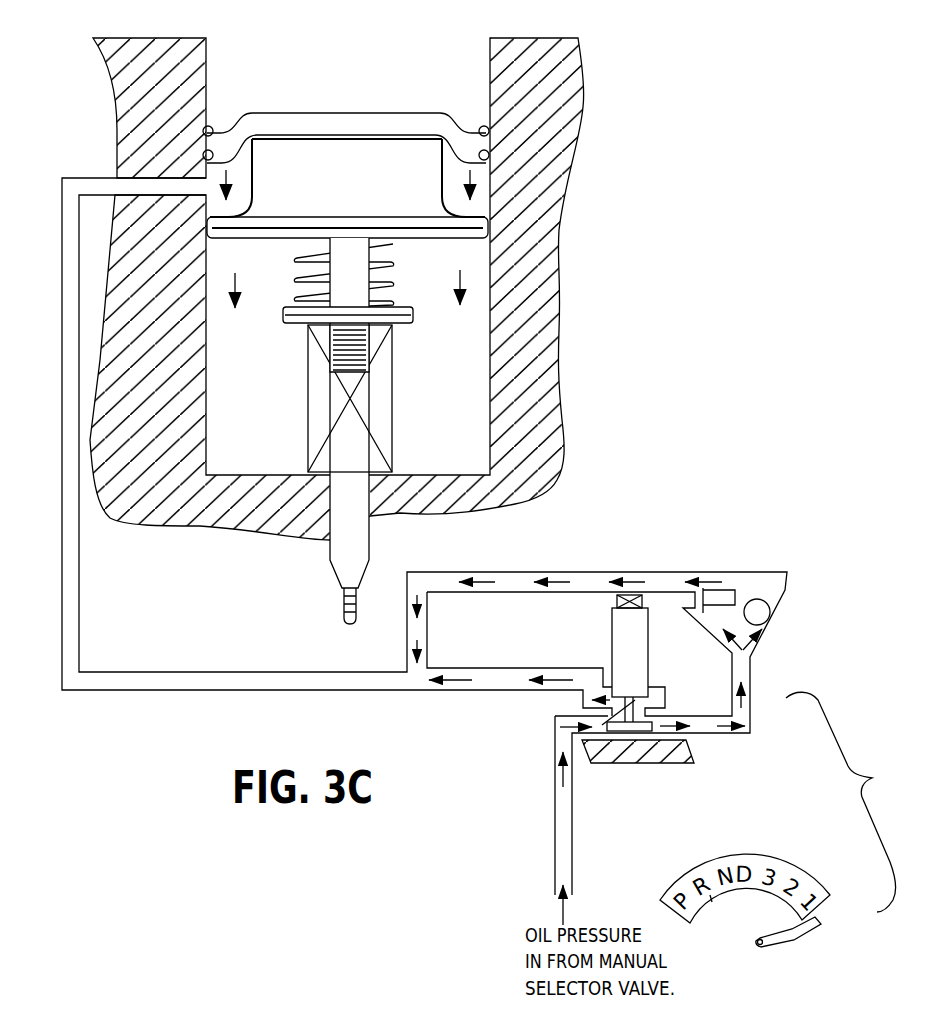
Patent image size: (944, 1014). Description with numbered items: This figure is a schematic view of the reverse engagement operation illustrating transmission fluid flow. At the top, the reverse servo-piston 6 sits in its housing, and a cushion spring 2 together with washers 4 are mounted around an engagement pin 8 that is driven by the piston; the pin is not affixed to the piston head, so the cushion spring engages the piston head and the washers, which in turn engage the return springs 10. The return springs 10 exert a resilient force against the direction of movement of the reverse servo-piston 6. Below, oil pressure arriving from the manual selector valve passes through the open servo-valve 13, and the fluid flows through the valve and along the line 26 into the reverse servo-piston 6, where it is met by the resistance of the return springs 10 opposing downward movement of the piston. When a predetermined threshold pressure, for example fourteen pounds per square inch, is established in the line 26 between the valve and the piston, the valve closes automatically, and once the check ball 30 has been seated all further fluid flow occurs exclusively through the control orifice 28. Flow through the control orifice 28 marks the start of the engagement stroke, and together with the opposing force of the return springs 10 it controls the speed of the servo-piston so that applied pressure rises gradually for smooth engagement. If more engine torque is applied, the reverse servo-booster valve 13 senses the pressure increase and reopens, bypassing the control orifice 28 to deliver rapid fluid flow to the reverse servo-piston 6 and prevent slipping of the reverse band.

The cushion spring 2 is at (393, 253).
The washers 4 is at (408, 308).
The reverse servo-piston 6 is at (352, 192).
The engagement pin 8 is at (366, 413).
The return springs 10 is at (308, 404).
The servo-valve 13 is at (648, 617).
The line 26 is at (178, 673).
The control orifice 28 is at (739, 590).
The check ball 30 is at (764, 614).